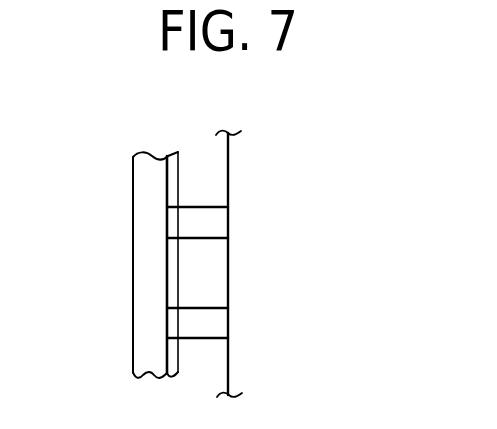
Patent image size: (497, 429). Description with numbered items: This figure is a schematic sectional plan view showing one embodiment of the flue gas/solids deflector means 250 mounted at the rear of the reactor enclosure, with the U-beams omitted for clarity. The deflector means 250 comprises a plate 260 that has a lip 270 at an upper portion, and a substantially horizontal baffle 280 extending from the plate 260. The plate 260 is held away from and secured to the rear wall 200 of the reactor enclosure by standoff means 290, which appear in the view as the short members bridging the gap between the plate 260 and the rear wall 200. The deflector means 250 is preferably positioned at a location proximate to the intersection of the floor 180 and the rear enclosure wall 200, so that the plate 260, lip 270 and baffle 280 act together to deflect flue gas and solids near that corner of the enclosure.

The floor 180 is at (400, 266).
The rear wall 200 is at (228, 377).
The flue gas/solids deflector means 250 is at (148, 288).
The plate 260 is at (167, 327).
The lip 270 is at (168, 170).
The baffle 280 is at (147, 195).
The standoff means 290 is at (213, 223).